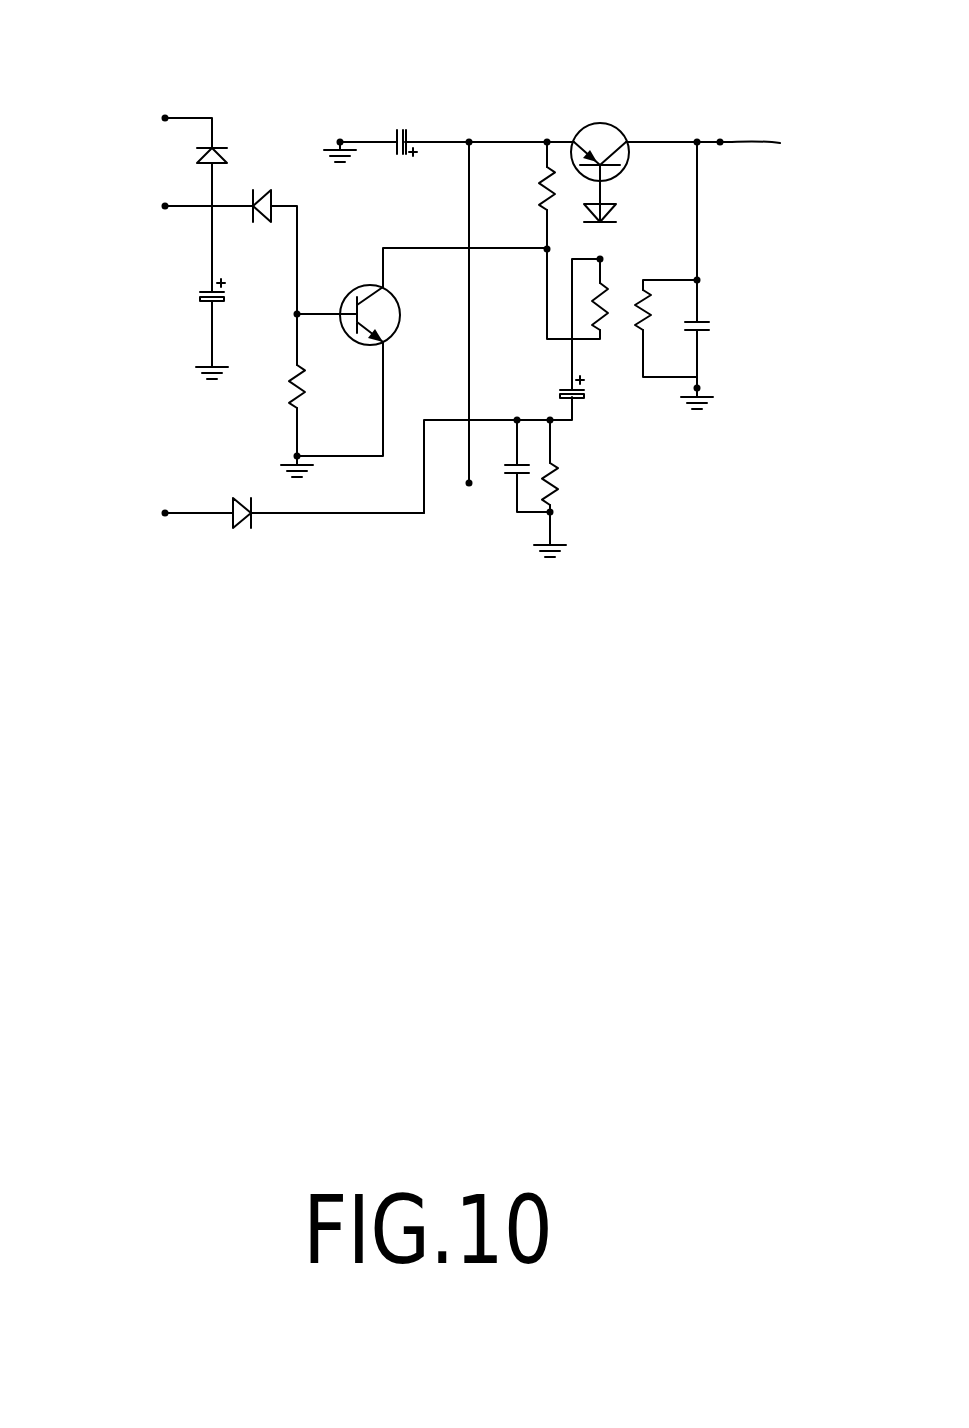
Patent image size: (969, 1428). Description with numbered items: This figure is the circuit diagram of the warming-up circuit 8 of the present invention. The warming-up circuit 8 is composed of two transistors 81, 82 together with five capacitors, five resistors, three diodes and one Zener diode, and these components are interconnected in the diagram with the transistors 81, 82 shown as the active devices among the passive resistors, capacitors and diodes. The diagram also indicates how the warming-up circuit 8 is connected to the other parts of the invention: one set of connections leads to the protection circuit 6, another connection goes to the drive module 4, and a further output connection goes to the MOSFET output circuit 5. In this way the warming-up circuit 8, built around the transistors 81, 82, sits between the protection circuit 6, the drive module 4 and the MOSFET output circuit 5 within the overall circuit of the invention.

The drive module 4 is at (469, 483).
The MOSFET output circuit 5 is at (753, 148).
The protection circuit 6 is at (165, 118).
The warming-up circuit 8 is at (590, 447).
The transistor 81 is at (595, 135).
The transistor 82 is at (375, 292).